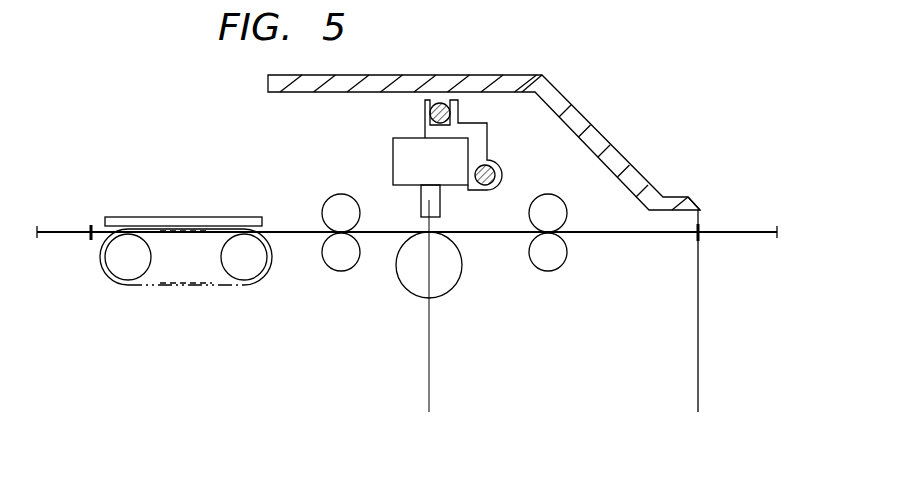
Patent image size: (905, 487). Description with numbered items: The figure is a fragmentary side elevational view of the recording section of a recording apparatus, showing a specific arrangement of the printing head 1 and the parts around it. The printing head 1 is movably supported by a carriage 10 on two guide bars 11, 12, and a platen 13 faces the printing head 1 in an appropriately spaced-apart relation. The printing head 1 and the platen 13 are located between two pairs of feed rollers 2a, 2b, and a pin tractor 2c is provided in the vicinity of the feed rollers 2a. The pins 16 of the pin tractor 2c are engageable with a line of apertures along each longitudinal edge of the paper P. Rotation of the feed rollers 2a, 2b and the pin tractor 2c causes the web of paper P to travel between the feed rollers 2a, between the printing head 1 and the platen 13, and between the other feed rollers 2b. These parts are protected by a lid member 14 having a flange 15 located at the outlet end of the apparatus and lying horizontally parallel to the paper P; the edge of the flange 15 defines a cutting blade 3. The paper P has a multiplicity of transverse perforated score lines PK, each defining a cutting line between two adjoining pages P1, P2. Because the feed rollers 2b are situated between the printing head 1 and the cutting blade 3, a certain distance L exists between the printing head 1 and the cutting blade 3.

The printing head 1 is at (396, 163).
The feed rollers 2a is at (342, 273).
The feed rollers 2b is at (548, 275).
The pin tractor 2c is at (182, 292).
The cutting blade 3 is at (697, 199).
The carriage 10 is at (479, 139).
The guide bar 11 is at (441, 101).
The guide bar 12 is at (500, 175).
The platen 13 is at (417, 295).
The lid member 14 is at (519, 72).
The flange 15 is at (668, 201).
The pins 16 is at (157, 223).
The paper P is at (71, 230).
The perforated score line PK is at (88, 235).
The page P1 is at (741, 236).
The page P2 is at (632, 236).
The distance L is at (698, 400).